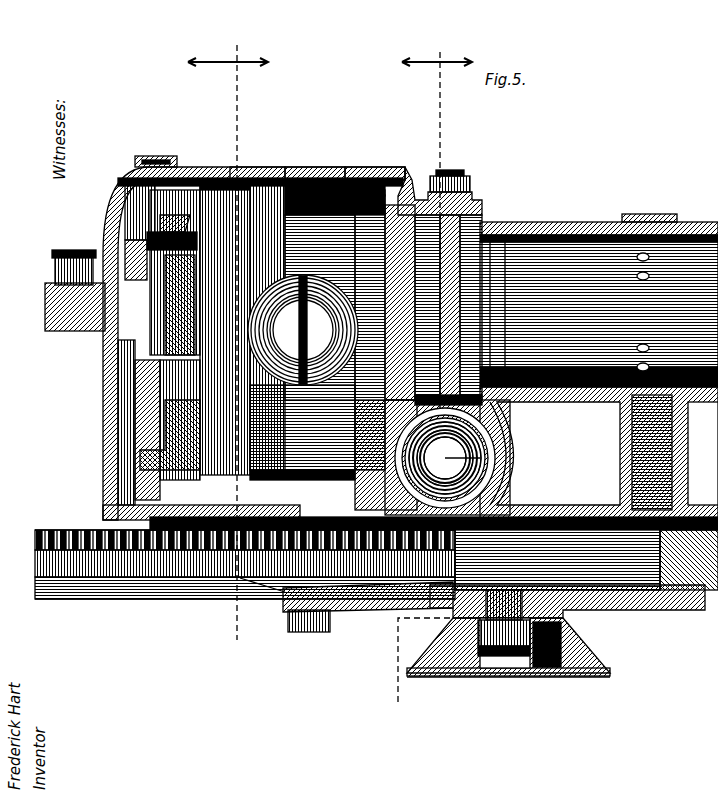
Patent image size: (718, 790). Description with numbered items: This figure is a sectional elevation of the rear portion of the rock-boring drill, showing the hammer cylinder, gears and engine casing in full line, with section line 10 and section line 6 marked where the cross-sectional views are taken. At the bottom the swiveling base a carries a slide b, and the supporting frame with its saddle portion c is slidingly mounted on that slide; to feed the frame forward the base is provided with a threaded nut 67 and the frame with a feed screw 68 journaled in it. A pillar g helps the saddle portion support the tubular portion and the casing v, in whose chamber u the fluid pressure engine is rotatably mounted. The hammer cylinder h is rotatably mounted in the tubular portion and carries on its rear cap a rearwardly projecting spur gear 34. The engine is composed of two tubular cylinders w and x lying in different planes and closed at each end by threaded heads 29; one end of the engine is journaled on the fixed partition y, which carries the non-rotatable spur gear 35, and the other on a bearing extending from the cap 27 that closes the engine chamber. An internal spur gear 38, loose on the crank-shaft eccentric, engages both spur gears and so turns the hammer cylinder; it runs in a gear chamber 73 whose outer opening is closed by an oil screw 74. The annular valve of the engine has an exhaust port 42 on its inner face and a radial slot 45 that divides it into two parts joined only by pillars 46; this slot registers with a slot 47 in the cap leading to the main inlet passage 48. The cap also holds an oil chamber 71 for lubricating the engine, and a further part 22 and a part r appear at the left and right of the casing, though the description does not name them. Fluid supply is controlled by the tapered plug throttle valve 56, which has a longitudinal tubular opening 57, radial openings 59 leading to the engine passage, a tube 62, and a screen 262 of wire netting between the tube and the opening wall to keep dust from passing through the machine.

The section line 10 is at (228, 331).
The section line 6 is at (435, 370).
The cap 27 is at (128, 192).
The radial slot 45 is at (178, 166).
The internal spur gear 38 is at (417, 200).
The oil screw 74 is at (456, 190).
The hammer cylinder h is at (568, 262).
The spur gear 34 is at (505, 303).
The pillar g is at (625, 450).
The opening r is at (668, 458).
The gear chamber 73 is at (493, 407).
The bearing block 22 is at (112, 258).
The pillars 46 is at (186, 218).
The exhaust port 42 is at (180, 282).
The oil chamber 71 is at (42, 320).
The main inlet passage 48 is at (100, 432).
The slot 47 is at (155, 372).
The tubular cylinder w is at (242, 327).
The tubular cylinder x is at (320, 307).
The partition y is at (370, 330).
The non-rotatable spur gear 35 is at (415, 300).
The chamber u is at (327, 176).
The casing v is at (380, 178).
The threaded heads 29 is at (258, 178).
The tapered plug throttle valve 56 is at (505, 444).
The longitudinal tubular opening 57 is at (520, 455).
The tube 62 is at (506, 470).
The screen 262 is at (490, 485).
The saddle portion c is at (224, 595).
The radial openings 59 is at (557, 559).
The threaded nut 67 is at (618, 560).
The feed screw 68 is at (383, 598).
The slide b is at (352, 602).
The swiveling base a is at (556, 673).